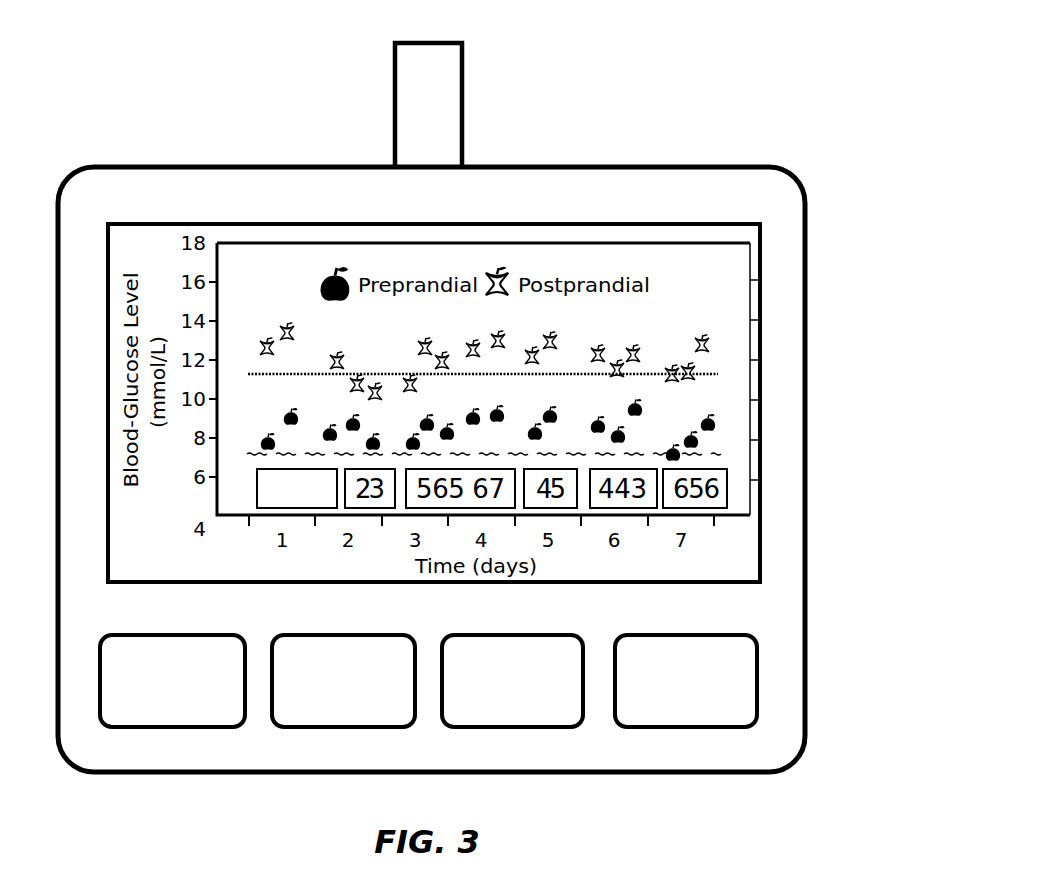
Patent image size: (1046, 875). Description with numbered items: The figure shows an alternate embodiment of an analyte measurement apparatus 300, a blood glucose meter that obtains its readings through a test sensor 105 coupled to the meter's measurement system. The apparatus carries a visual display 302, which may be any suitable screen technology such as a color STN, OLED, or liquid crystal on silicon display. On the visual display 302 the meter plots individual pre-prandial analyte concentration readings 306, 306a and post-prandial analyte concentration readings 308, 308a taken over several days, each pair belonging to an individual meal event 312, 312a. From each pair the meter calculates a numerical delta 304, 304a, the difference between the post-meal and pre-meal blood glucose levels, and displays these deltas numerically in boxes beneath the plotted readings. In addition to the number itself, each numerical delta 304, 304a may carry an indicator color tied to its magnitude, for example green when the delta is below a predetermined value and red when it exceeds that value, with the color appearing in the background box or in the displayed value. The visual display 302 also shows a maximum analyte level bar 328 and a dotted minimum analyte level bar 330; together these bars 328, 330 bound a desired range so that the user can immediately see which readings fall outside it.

The analyte measurement apparatus 300 is at (607, 100).
The test sensor 105 is at (433, 90).
The visual display 302 is at (627, 222).
The numerical delta 304 is at (270, 452).
The numerical delta 304a is at (300, 497).
The pre-prandial analyte concentration reading 306 is at (262, 478).
The pre-prandial analyte concentration reading 306a is at (284, 418).
The post-prandial analyte concentration reading 308 is at (263, 338).
The post-prandial analyte concentration reading 308a is at (285, 323).
The meal event 312 is at (257, 288).
The meal event 312a is at (283, 276).
The maximum analyte level bar 328 is at (705, 373).
The minimum analyte level bar 330 is at (707, 455).